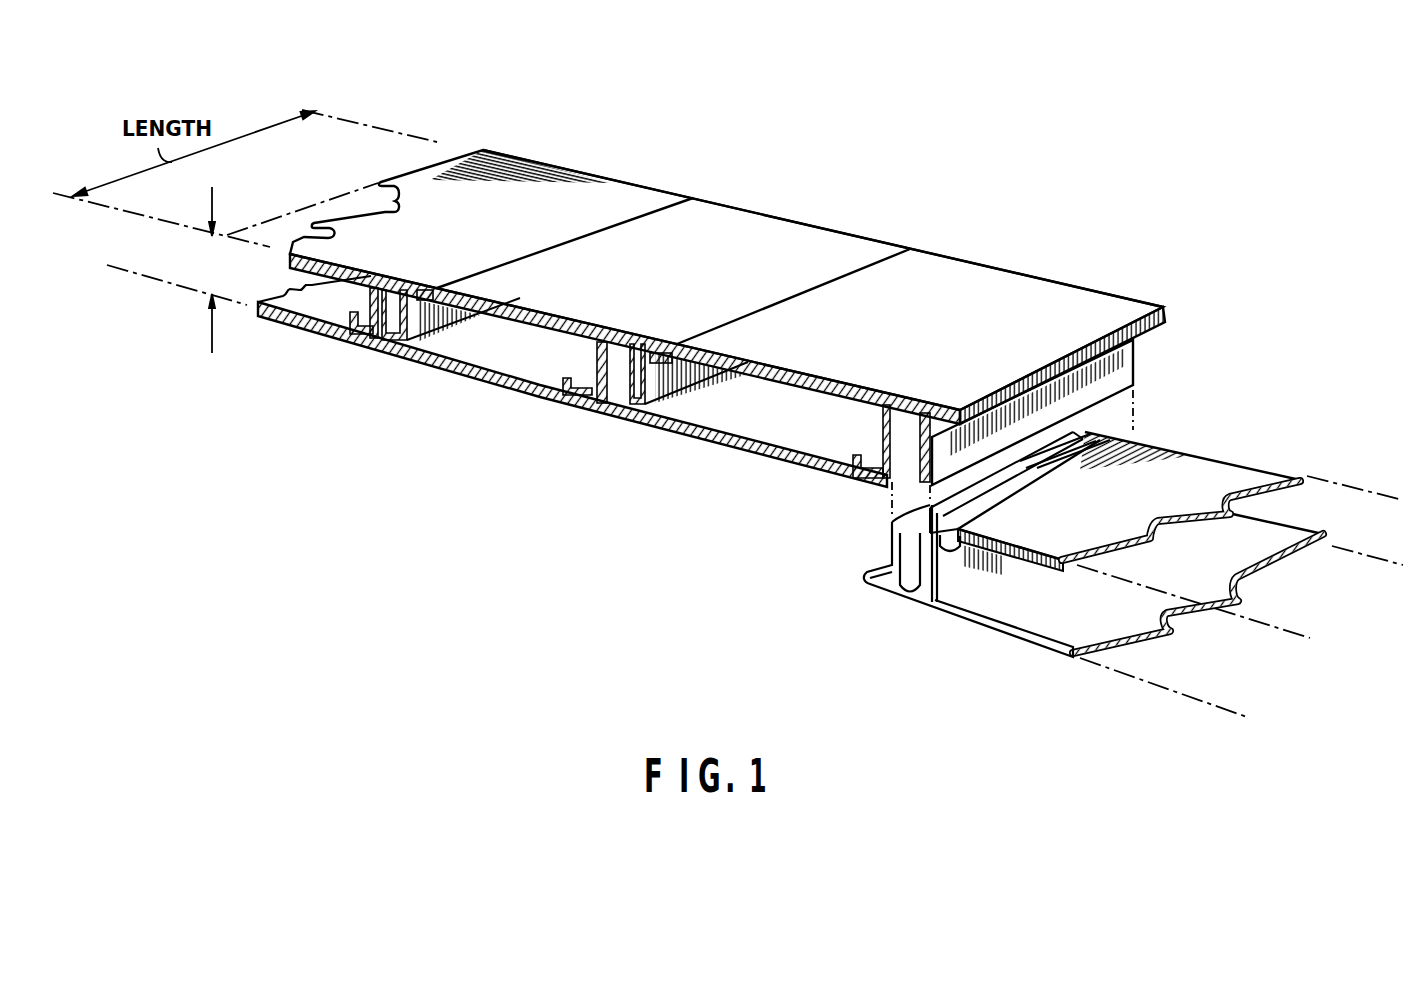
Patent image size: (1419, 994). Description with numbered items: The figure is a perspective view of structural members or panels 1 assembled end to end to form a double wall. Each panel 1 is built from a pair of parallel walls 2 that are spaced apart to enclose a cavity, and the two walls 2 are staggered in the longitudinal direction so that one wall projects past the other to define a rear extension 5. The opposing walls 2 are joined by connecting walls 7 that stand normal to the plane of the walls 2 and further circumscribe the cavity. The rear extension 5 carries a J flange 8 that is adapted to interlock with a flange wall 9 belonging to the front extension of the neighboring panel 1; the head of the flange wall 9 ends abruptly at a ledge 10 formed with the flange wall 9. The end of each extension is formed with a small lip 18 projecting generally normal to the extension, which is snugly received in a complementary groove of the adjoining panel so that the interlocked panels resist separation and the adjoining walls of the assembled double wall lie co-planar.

The panel 1 is at (677, 232).
The wall 2 is at (763, 240).
The rear extension 5 is at (619, 324).
The connecting wall 7 is at (885, 428).
The J flange 8 is at (884, 537).
The flange wall 9 is at (1117, 368).
The ledge 10 is at (803, 358).
The lip 18 is at (957, 436).